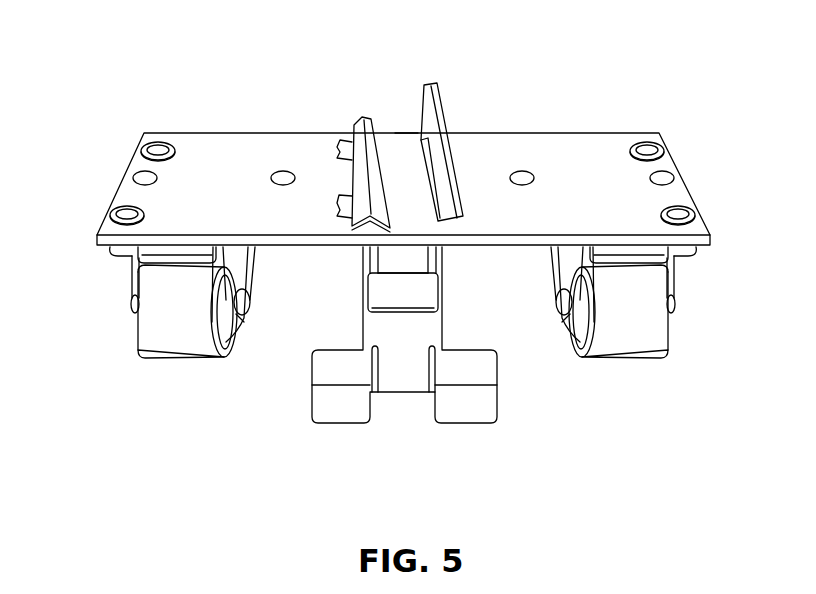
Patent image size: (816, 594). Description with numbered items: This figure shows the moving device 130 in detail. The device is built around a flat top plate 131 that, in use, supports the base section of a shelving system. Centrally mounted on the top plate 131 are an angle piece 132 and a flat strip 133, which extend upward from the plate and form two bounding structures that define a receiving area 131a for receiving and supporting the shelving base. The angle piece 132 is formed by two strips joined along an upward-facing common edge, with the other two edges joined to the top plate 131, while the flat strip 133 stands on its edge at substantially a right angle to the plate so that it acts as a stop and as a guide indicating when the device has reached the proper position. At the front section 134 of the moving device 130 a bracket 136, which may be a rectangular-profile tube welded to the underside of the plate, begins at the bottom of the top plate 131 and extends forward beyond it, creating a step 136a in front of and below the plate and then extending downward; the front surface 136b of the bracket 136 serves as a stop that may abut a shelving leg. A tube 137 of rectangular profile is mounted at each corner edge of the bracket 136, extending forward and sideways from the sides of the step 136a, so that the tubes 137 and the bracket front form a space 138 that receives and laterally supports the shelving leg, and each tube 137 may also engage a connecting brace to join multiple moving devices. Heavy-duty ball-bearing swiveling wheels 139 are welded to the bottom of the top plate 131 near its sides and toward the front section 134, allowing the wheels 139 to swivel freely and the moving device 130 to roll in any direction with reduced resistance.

The moving device 130 is at (212, 411).
The top plate 131 is at (288, 147).
The receiving area 131a is at (402, 143).
The angle piece 132 is at (362, 118).
The flat strip 133 is at (432, 85).
The front section 134 is at (402, 384).
The bracket 136 is at (461, 297).
The step 136a is at (443, 288).
The front surface 136b is at (411, 330).
The tube 137 is at (323, 405).
The space 138 is at (402, 412).
The wheels 139 is at (165, 337).